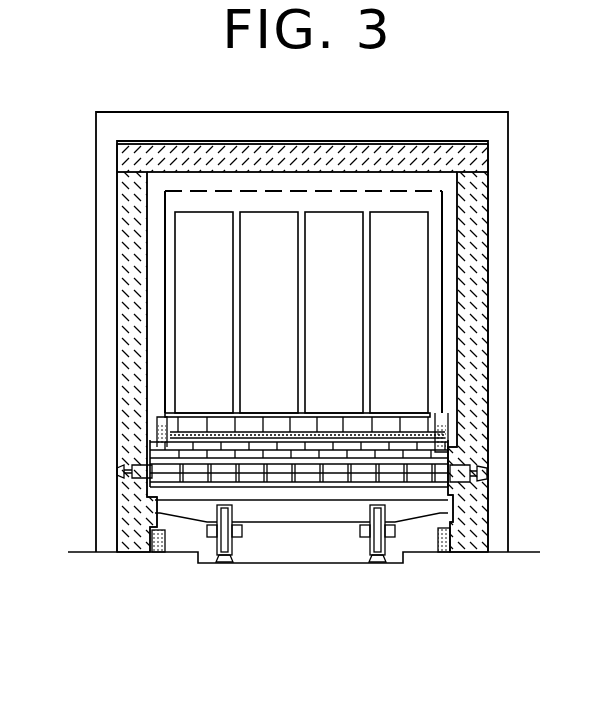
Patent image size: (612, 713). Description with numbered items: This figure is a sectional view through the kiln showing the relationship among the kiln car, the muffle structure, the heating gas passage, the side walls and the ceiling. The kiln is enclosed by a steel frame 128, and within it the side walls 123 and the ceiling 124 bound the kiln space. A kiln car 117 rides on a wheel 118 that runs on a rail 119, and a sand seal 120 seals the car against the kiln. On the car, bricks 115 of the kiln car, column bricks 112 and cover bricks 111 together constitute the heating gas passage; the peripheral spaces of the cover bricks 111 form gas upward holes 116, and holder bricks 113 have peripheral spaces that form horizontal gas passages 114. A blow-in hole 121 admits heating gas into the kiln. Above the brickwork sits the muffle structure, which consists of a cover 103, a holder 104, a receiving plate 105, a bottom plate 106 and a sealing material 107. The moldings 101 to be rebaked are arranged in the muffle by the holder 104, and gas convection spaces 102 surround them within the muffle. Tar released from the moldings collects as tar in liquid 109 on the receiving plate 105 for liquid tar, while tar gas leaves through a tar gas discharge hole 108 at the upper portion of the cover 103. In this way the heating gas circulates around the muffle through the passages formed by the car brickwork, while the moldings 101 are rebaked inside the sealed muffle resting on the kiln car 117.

The moldings to be rebaked 101 is at (197, 222).
The gas convection spaces 102 is at (437, 262).
The cover 103 is at (442, 227).
The holder 104 is at (227, 428).
The receiving plate 105 is at (446, 420).
The bottom plate 106 is at (441, 433).
The sealing material 107 is at (441, 448).
The tar gas discharge hole 108 is at (285, 190).
The tar in liquid 109 is at (193, 443).
The cover bricks 111 is at (177, 458).
The column bricks 112 is at (252, 485).
The holder bricks 113 is at (452, 460).
The horizontal gas passages 114 is at (325, 488).
The bricks of kiln car 115 is at (351, 496).
The gas upward holes 116 is at (220, 458).
The kiln car 117 is at (283, 513).
The wheel 118 is at (383, 557).
The rail 119 is at (225, 560).
The sand seal 120 is at (453, 546).
The blow-in hole 121 is at (117, 471).
The side wall 123 is at (127, 330).
The ceiling 124 is at (213, 156).
The steel frame 128 is at (412, 126).